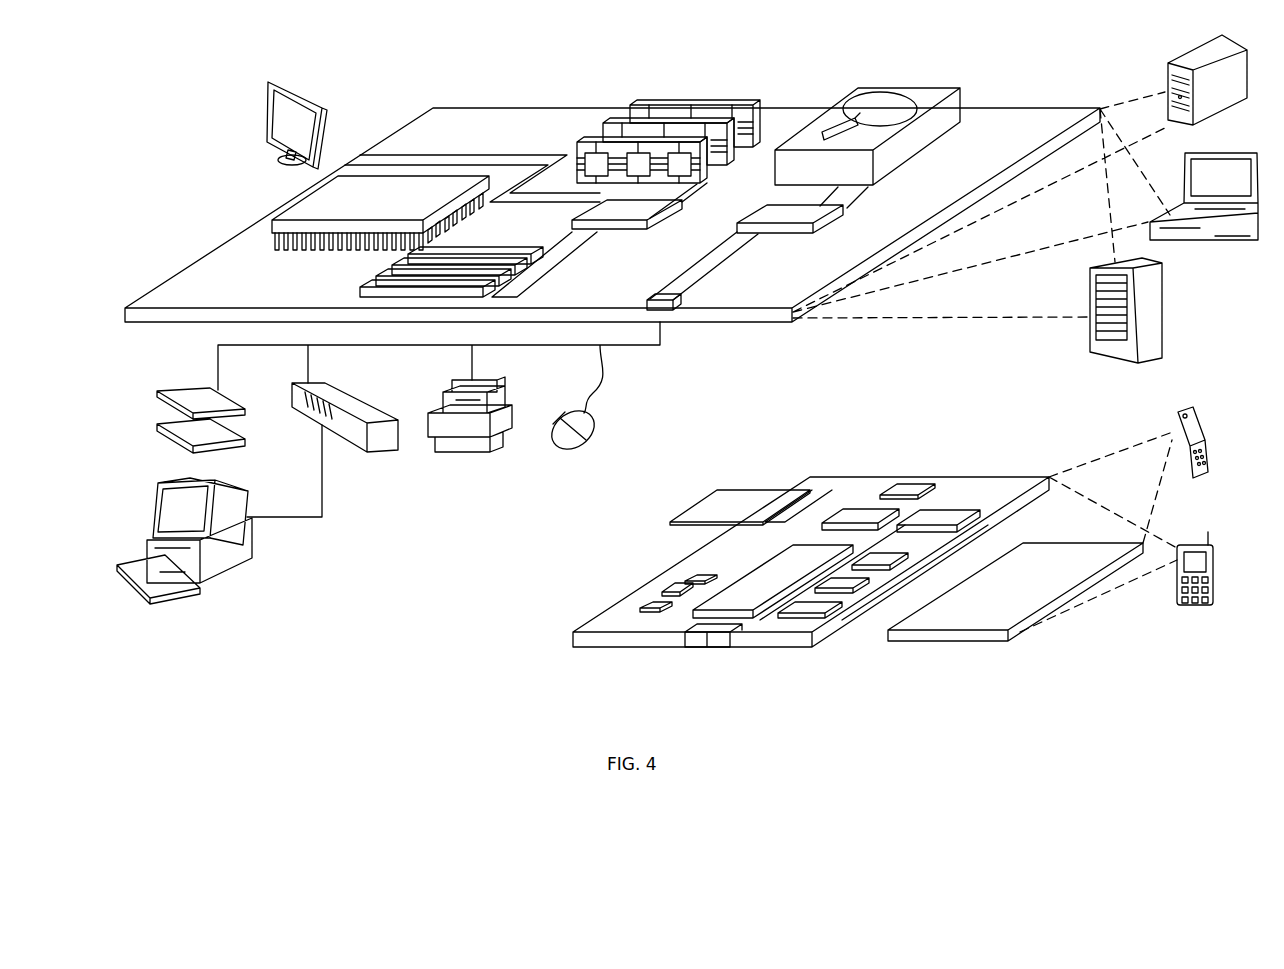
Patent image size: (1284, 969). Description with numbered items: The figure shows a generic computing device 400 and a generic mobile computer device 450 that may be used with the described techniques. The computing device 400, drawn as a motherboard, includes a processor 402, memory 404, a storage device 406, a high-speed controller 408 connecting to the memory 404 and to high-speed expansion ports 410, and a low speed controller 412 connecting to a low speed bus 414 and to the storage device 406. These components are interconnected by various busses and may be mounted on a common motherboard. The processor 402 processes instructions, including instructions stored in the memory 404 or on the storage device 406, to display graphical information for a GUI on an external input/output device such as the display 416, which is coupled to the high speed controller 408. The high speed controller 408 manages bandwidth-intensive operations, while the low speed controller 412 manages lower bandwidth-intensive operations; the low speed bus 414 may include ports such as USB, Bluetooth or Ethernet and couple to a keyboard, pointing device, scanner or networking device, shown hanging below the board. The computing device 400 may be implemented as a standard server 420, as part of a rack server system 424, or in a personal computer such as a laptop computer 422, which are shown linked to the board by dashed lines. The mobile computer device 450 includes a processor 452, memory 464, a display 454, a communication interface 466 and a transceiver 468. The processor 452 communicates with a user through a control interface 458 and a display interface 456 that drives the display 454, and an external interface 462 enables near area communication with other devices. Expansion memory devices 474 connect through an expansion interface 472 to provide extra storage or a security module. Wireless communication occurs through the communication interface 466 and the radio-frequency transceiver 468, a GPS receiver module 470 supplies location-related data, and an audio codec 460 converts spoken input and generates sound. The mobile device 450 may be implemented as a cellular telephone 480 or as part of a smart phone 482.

The computing device 400 is at (393, 64).
The processor 402 is at (300, 201).
The memory 404 is at (701, 106).
The storage device 406 is at (909, 87).
The high-speed controller 408 is at (640, 209).
The high-speed expansion ports 410 is at (386, 275).
The low speed controller 412 is at (771, 213).
The low speed bus 414 is at (667, 293).
The display 416 is at (279, 83).
The standard server 420 is at (1188, 61).
The laptop computer 422 is at (1234, 152).
The rack server system 424 is at (1165, 311).
The mobile computer device 450 is at (541, 649).
The processor 452 is at (743, 585).
The display 454 is at (1050, 557).
The display interface 456 is at (826, 608).
The control interface 458 is at (850, 584).
The audio codec 460 is at (883, 558).
The external interface 462 is at (708, 633).
The memory 464 is at (665, 593).
The communication interface 466 is at (867, 507).
The transceiver 468 is at (946, 507).
The GPS receiver module 470 is at (910, 483).
The expansion interface 472 is at (795, 487).
The expansion memory devices 474 is at (720, 487).
The cellular telephone 480 is at (1186, 411).
The smart phone 482 is at (1191, 545).